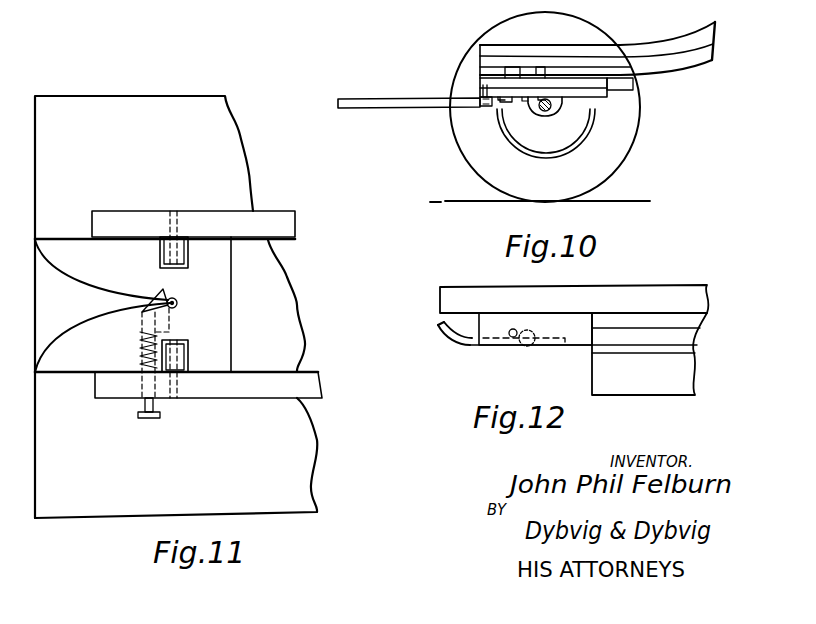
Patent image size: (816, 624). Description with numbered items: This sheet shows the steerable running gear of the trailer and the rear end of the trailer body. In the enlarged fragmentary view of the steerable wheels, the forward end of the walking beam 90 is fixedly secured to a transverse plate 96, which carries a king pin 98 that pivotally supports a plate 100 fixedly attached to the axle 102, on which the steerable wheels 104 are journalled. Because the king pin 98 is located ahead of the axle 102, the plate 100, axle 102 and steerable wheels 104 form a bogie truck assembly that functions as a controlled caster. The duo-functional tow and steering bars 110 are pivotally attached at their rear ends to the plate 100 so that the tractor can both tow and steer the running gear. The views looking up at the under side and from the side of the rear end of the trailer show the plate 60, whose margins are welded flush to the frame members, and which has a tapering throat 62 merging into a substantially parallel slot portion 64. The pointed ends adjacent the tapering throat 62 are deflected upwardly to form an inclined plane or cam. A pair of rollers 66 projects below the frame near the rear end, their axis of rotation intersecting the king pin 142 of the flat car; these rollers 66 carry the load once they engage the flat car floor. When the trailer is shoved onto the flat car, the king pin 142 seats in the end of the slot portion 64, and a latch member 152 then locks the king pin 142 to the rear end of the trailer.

In FIG. 11, the plate 60 is at (222, 248).
In FIG. 12, the plate 60 is at (574, 340).
In FIG. 11, the tapering throat 62 is at (55, 262).
In FIG. 12, the tapering throat 62 is at (438, 326).
In FIG. 11, the slot portion 64 is at (166, 293).
In FIG. 11, the rollers 66 is at (178, 247).
In FIG. 12, the rollers 66 is at (528, 348).
In FIG. 10, the walking beam 90 is at (658, 43).
In FIG. 10, the transverse plate 96 is at (510, 89).
In FIG. 10, the king pin 98 is at (512, 79).
In FIG. 10, the plate 100 is at (633, 89).
In FIG. 10, the axle 102 is at (550, 112).
In FIG. 10, the steerable wheels 104 is at (598, 167).
In FIG. 10, the tow and steering bars 110 is at (383, 94).
In FIG. 11, the king pin 142 is at (178, 306).
In FIG. 11, the latch member 152 is at (162, 306).